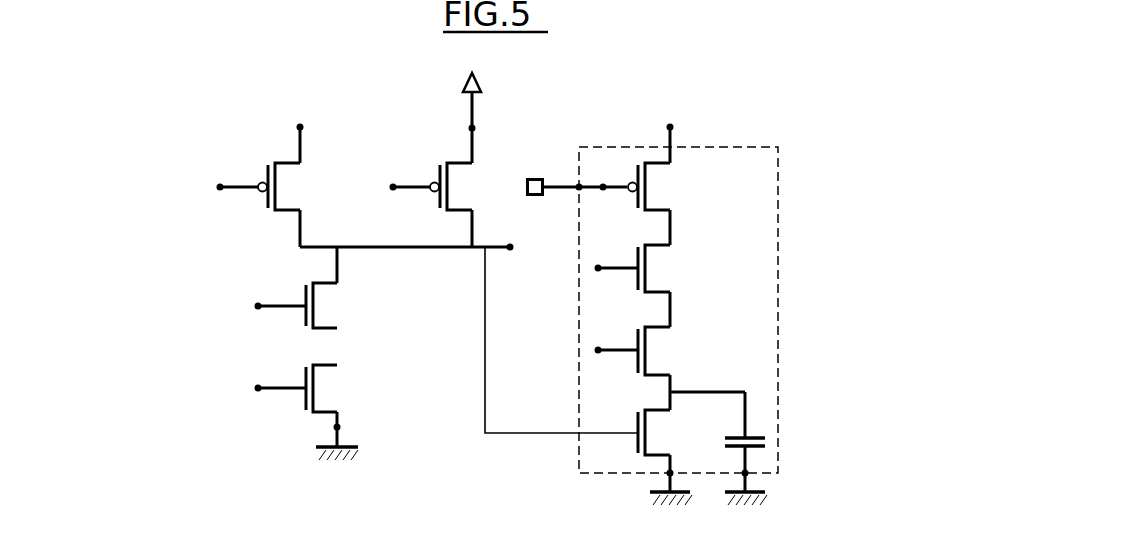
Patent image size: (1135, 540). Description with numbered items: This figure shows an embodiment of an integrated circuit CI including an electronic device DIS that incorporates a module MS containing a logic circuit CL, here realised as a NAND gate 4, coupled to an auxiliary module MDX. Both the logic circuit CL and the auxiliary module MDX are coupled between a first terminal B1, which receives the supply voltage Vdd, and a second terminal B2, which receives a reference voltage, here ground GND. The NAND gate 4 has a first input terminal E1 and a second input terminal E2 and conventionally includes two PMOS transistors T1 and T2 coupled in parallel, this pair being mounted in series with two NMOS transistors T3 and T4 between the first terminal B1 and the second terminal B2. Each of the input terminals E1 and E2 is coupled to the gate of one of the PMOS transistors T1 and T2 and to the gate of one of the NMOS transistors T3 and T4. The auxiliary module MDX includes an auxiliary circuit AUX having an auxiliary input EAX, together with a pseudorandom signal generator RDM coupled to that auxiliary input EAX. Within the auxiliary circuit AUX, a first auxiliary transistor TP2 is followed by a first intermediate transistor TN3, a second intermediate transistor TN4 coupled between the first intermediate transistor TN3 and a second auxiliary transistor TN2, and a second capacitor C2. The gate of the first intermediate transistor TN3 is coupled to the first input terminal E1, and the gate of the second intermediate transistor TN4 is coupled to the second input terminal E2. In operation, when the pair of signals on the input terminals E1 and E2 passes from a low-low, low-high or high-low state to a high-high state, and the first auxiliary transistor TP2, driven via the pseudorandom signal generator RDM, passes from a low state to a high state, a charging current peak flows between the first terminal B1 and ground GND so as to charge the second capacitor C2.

The PMOS transistor T1 is at (298, 193).
The PMOS transistor T2 is at (470, 174).
The NMOS transistor T3 is at (336, 312).
The NMOS transistor T4 is at (336, 395).
The first auxiliary transistor TP2 is at (668, 194).
The second auxiliary transistor TN2 is at (635, 427).
The first intermediate transistor TN3 is at (668, 276).
The second intermediate transistor TN4 is at (668, 358).
The second capacitor C2 is at (770, 442).
The first terminal B1 is at (303, 127).
The second terminal B2 is at (340, 427).
The first input terminal E1 is at (220, 183).
The second input terminal E2 is at (393, 183).
The supply voltage Vdd is at (484, 80).
The ground GND is at (300, 458).
The pseudorandom signal generator RDM is at (535, 197).
The auxiliary input EAX is at (578, 183).
The auxiliary module MDX is at (600, 141).
The auxiliary circuit AUX is at (779, 310).
The integrated circuit CI is at (155, 120).
The module MS is at (182, 92).
The electronic device DIS is at (207, 65).
The logic circuit CL is at (255, 127).
The NAND gate 4 is at (292, 108).